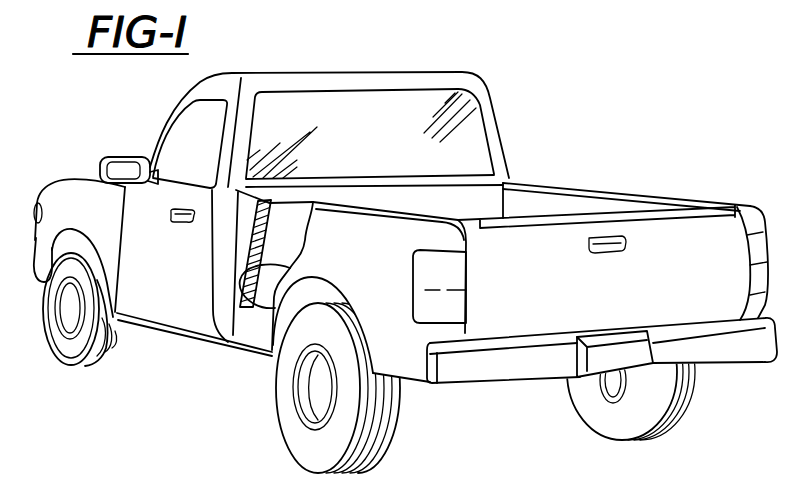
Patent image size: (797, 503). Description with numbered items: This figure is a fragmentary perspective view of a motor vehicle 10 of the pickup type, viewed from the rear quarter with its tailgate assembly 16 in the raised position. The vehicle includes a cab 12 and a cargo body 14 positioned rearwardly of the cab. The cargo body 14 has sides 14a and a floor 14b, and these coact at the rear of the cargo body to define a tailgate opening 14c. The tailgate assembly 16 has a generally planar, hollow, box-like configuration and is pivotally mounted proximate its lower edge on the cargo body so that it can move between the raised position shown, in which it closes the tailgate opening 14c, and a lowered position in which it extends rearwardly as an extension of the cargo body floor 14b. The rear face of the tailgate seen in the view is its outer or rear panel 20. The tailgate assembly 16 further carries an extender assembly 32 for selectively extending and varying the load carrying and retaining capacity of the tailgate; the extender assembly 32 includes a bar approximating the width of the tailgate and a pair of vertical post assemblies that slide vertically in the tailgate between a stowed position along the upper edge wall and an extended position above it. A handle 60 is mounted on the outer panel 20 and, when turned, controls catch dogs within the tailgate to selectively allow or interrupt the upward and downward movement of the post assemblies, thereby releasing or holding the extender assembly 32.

The motor vehicle 10 is at (536, 83).
The cab 12 is at (133, 133).
The cargo body 14 is at (643, 181).
The sides 14a is at (363, 208).
The floor 14b is at (233, 335).
The tailgate opening 14c is at (730, 255).
The tailgate assembly 16 is at (655, 238).
The outer or rear panel 20 is at (552, 305).
The extender assembly 32 is at (524, 200).
The handle 60 is at (612, 251).